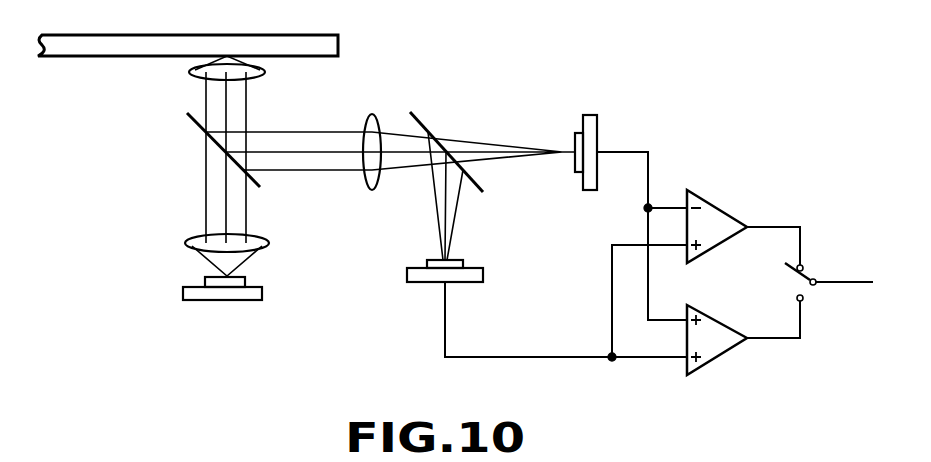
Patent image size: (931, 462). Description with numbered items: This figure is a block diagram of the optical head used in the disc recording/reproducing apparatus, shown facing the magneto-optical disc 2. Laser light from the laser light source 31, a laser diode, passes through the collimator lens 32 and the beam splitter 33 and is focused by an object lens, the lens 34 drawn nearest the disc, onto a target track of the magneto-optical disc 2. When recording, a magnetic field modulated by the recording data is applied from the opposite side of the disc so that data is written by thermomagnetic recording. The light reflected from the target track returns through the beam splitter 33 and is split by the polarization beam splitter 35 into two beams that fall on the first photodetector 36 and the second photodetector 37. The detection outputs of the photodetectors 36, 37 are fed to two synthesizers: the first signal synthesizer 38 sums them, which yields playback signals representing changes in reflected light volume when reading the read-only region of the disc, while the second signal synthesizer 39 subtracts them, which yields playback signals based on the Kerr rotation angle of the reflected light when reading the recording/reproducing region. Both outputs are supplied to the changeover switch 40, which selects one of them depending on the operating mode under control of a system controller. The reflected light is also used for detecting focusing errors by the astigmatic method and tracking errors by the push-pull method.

The magneto-optical disc 2 is at (86, 48).
The laser light source 31 is at (183, 293).
The collimator lens 32 is at (185, 243).
The beam splitter 33 is at (187, 118).
The objective lens 34 is at (190, 76).
The polarization beam splitter 35 is at (422, 122).
The first photodetector 36 is at (597, 122).
The second photodetector 37 is at (407, 278).
The first signal synthesizer 38 is at (715, 330).
The second signal synthesizer 39 is at (717, 215).
The changeover switch 40 is at (808, 275).